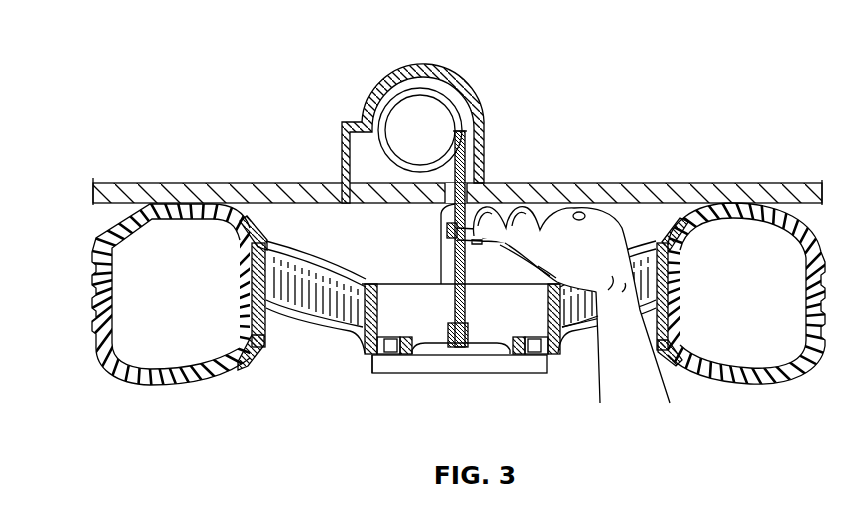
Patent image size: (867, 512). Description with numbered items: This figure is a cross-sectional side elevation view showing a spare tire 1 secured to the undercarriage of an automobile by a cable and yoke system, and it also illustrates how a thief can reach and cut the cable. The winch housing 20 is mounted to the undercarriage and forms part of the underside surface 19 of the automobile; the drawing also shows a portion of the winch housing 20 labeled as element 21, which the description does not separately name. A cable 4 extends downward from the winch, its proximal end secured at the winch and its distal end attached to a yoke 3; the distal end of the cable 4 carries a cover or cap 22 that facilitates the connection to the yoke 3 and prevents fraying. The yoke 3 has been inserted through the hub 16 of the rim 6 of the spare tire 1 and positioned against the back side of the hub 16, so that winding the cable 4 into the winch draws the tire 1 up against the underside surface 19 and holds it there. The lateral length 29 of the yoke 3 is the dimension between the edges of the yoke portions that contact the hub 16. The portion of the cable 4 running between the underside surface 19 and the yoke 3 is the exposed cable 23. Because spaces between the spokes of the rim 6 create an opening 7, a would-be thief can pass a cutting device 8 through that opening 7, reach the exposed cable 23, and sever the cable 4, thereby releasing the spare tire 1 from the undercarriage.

The spare tire 1 is at (773, 381).
The yoke 3 is at (447, 375).
The cable 4 is at (456, 262).
The rim 6 is at (636, 248).
The opening 7 is at (575, 348).
The cutting device 8 is at (483, 240).
The hub 16 is at (365, 356).
The underside surface 19 is at (103, 206).
The winch housing 20 is at (448, 66).
The bracket opening 21 is at (482, 104).
The cover or cap 22 is at (449, 346).
The exposed cable 23 is at (441, 283).
The lateral length 29 is at (372, 380).